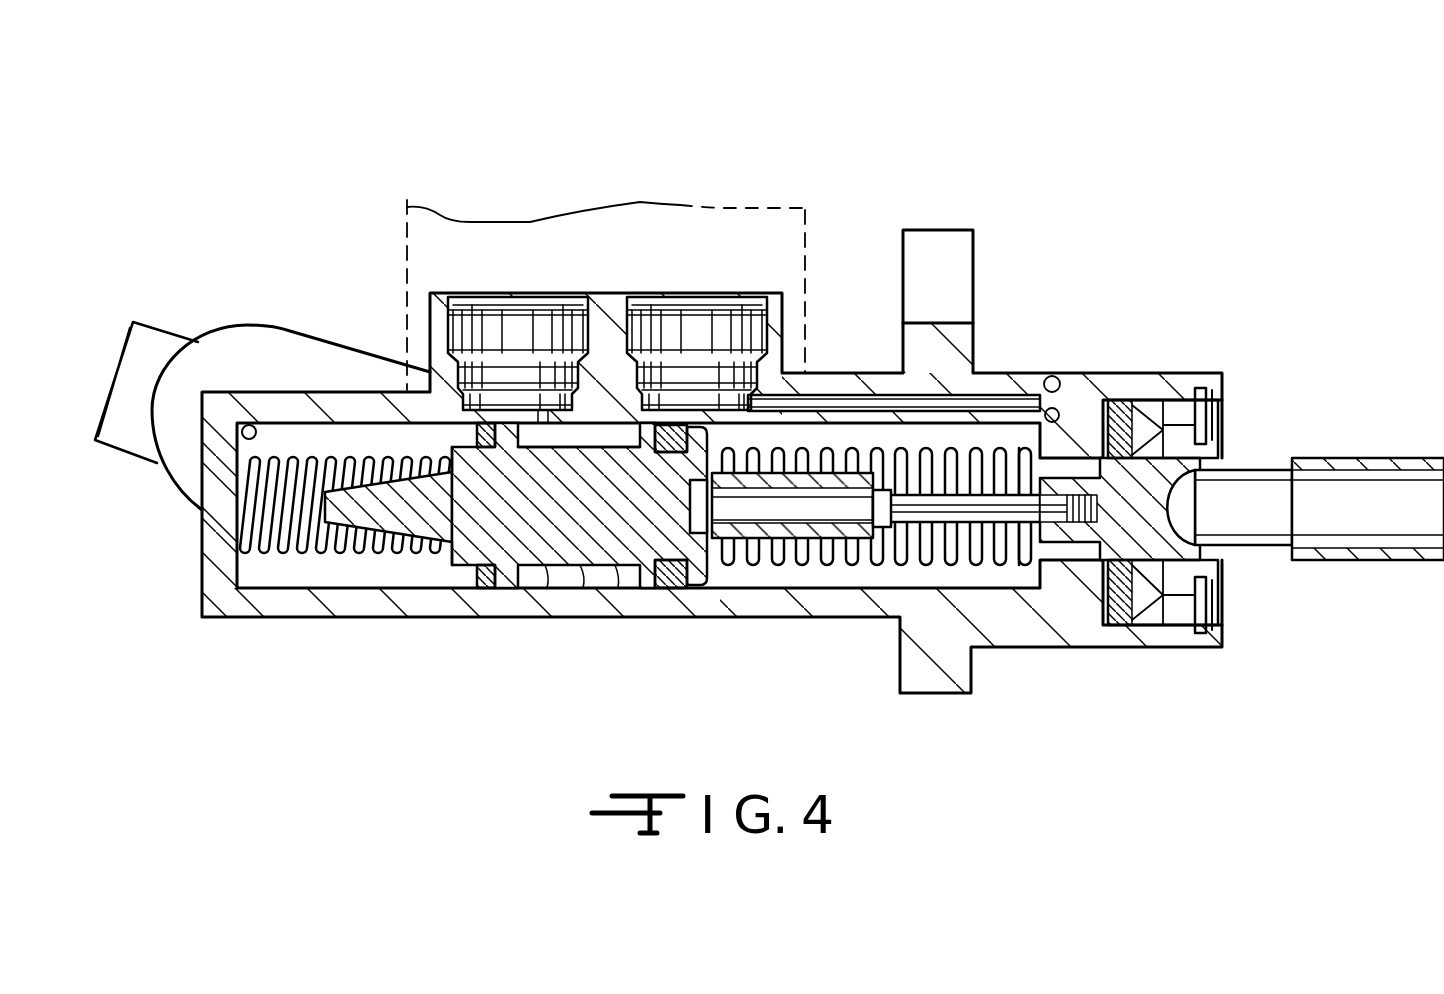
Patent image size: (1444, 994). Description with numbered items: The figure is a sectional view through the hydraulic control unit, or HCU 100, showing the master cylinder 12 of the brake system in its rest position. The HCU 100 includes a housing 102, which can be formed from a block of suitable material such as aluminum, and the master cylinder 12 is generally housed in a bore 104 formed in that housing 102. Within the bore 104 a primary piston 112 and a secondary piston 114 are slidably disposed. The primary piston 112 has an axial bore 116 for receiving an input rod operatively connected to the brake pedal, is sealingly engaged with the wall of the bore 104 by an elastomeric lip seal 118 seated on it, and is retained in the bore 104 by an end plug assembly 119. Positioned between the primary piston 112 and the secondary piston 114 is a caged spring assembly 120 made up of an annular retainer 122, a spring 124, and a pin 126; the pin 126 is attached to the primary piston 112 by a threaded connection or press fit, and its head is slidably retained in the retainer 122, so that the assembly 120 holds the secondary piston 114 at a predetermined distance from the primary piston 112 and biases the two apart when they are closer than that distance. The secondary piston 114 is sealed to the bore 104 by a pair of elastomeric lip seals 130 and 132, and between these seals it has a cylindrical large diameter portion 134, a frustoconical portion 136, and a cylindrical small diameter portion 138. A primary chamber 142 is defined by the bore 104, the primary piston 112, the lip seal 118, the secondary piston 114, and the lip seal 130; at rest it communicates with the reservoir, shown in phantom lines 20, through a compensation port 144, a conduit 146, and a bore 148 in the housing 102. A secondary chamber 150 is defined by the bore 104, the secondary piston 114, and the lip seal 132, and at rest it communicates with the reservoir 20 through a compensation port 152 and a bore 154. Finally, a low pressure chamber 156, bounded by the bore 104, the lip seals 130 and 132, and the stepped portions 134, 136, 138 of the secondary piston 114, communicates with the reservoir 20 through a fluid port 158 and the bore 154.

The master cylinder 12 is at (856, 638).
The fluid reservoir 20 is at (641, 203).
The HCU 100 is at (1140, 232).
The housing 102 is at (948, 321).
The bore 104 is at (278, 577).
The primary piston 112 is at (1247, 456).
The secondary piston 114 is at (547, 582).
The axial bore 116 is at (1350, 456).
The lip seal 118 is at (1063, 600).
The end plug assembly 119 is at (1223, 408).
The caged spring assembly 120 is at (814, 440).
The annular retainer 122 is at (783, 560).
The spring 124 is at (808, 560).
The pin 126 is at (945, 575).
The lip seal 130 is at (668, 583).
The lip seal 132 is at (480, 592).
The large diameter portion 134 is at (520, 588).
The frustoconical portion 136 is at (605, 567).
The small diameter portion 138 is at (625, 570).
The primary chamber 142 is at (960, 440).
The compensation port 144 is at (1078, 412).
The conduit 146 is at (862, 402).
The bore 148 is at (713, 325).
The secondary chamber 150 is at (303, 432).
The compensation port 152 is at (437, 410).
The bore 154 is at (462, 325).
The low pressure chamber 156 is at (598, 435).
The fluid port 158 is at (537, 420).